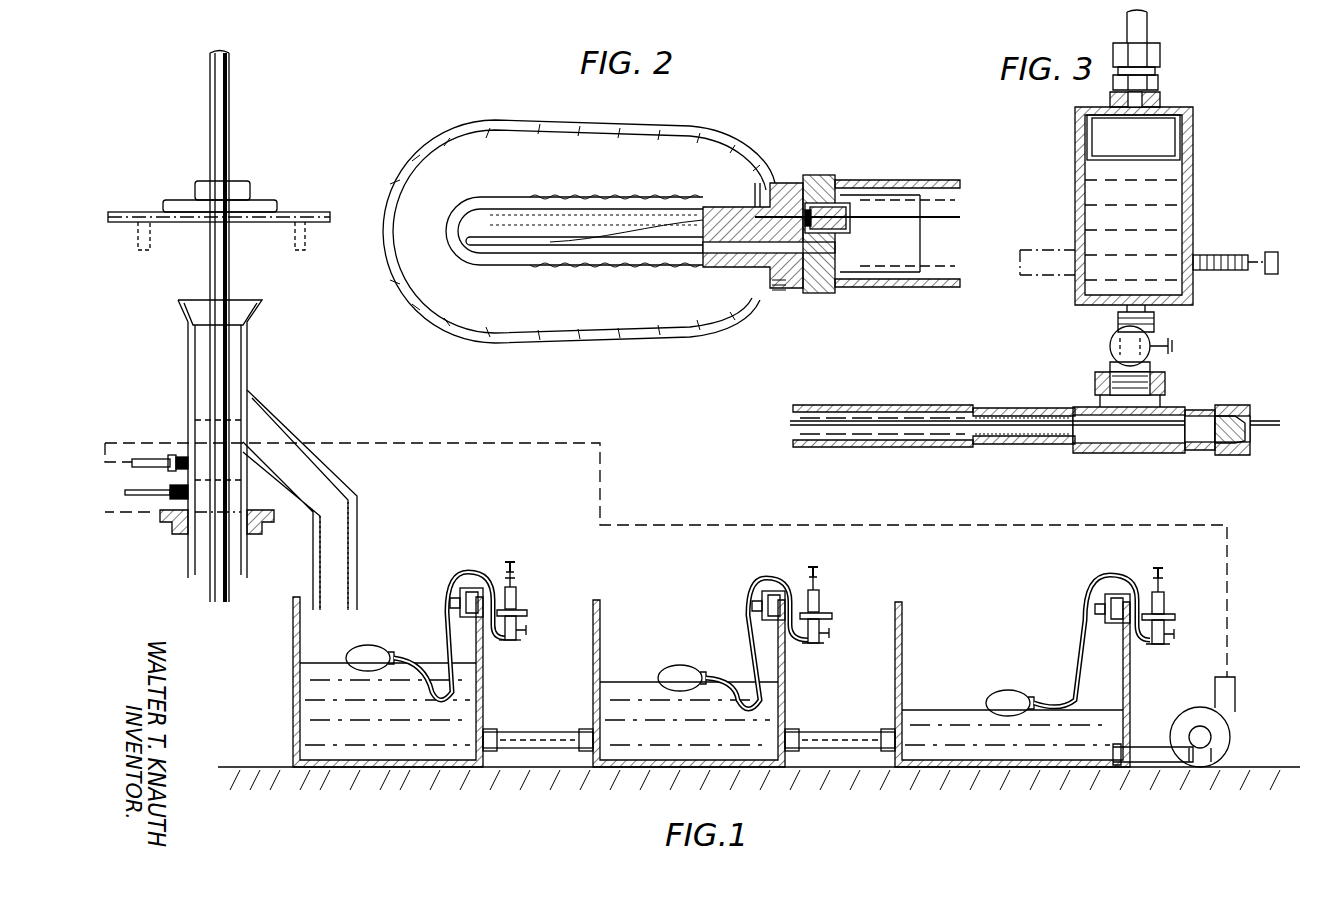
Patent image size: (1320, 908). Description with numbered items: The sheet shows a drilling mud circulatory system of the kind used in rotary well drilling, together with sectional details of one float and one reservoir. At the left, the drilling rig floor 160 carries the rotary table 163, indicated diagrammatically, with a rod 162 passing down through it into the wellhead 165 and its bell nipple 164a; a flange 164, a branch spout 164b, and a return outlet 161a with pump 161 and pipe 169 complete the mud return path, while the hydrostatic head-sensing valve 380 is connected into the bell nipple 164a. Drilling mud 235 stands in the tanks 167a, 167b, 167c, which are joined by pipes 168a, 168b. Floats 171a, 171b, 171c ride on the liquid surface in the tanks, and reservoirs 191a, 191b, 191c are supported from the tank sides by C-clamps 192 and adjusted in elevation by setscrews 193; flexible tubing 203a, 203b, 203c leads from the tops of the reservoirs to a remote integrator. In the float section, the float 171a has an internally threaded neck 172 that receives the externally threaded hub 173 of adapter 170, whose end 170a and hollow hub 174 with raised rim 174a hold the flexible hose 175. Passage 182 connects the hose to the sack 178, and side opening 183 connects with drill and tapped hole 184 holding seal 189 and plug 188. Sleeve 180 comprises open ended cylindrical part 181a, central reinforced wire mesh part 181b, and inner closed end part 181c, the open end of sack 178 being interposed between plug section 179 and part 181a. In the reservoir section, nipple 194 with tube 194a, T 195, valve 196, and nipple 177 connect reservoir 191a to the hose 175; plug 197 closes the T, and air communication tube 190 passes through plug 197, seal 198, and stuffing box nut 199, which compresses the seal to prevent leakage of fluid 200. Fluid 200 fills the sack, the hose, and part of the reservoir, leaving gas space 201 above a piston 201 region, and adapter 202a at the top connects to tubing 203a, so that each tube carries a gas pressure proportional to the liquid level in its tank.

In FIG. 1, the drilling rig floor 160 is at (300, 212).
In FIG. 1, the pump 161 is at (1230, 737).
In FIG. 1, the pump outlet 161a is at (1235, 691).
In FIG. 1, the rod 162 is at (230, 100).
In FIG. 1, the rotary table 163 is at (178, 200).
In FIG. 1, the tube flange 164 is at (190, 552).
In FIG. 1, the bell nipple 164a is at (188, 373).
In FIG. 1, the branch spout 164b is at (300, 454).
In FIG. 1, the wellhead 165 is at (146, 516).
In FIG. 1, the tank 167a is at (405, 597).
In FIG. 1, the tank 167b is at (648, 600).
In FIG. 1, the tank 167c is at (967, 602).
In FIG. 1, the connecting pipe 168a is at (540, 732).
In FIG. 1, the connecting pipe 168b is at (838, 732).
In FIG. 1, the pump inlet pipe 169 is at (1145, 747).
In FIG. 2, the adapter 170 is at (834, 300).
In FIG. 2, the fitting body end 170a is at (835, 301).
In FIG. 1, the float 171a is at (362, 646).
In FIG. 2, the float 171a is at (528, 121).
In FIG. 1, the float 171b is at (672, 666).
In FIG. 1, the float 171c is at (1000, 691).
In FIG. 2, the internally threaded neck 172 is at (778, 300).
In FIG. 2, the externally threaded hub 173 is at (795, 296).
In FIG. 2, the hollow hub 174 is at (870, 180).
In FIG. 2, the raised rim 174a is at (895, 288).
In FIG. 1, the flexible hose 175 is at (450, 637).
In FIG. 2, the flexible hose 175 is at (930, 180).
In FIG. 3, the flexible hose 175 is at (905, 405).
In FIG. 3, the nipple 177 is at (1154, 319).
In FIG. 2, the sack 178 is at (630, 223).
In FIG. 2, the plug section 179 is at (760, 259).
In FIG. 2, the sleeve 180 is at (648, 296).
In FIG. 2, the open ended cylindrical part 181a is at (660, 303).
In FIG. 2, the central reinforced wire mesh part 181b is at (560, 197).
In FIG. 2, the inner closed end part 181c is at (490, 270).
In FIG. 2, the passage 182 is at (772, 301).
In FIG. 2, the side opening 183 is at (757, 183).
In FIG. 2, the drill and tapped hole 184 is at (775, 183).
In FIG. 2, the plug 188 is at (935, 201).
In FIG. 2, the seal 189 is at (815, 203).
In FIG. 2, the air communication tube 190 is at (935, 226).
In FIG. 3, the air communication tube 190 is at (790, 425).
In FIG. 1, the reservoir 191a is at (517, 596).
In FIG. 3, the reservoir 191a is at (1193, 164).
In FIG. 1, the reservoir 191b is at (820, 599).
In FIG. 1, the reservoir 191c is at (1164, 600).
In FIG. 1, the C-clamp 192 is at (524, 612).
In FIG. 3, the C-clamp 192 is at (1218, 255).
In FIG. 3, the setscrew 193 is at (1270, 275).
In FIG. 3, the nipple 194 is at (1070, 407).
In FIG. 3, the tube 194a is at (1005, 391).
In FIG. 3, the T 195 is at (1160, 393).
In FIG. 1, the valve 196 is at (530, 631).
In FIG. 3, the valve 196 is at (1112, 347).
In FIG. 3, the plug 197 is at (1205, 452).
In FIG. 3, the seal 198 is at (1245, 455).
In FIG. 3, the stuffing box nut 199 is at (1240, 413).
In FIG. 2, the fluid 200 is at (615, 263).
In FIG. 3, the fluid 200 is at (1133, 233).
In FIG. 3, the space 201 is at (1133, 137).
In FIG. 3, the lock nut 202a is at (1158, 84).
In FIG. 1, the flexible tubing 203a is at (510, 568).
In FIG. 3, the flexible tubing 203a is at (1147, 31).
In FIG. 1, the flexible tubing 203b is at (813, 573).
In FIG. 1, the flexible tubing 203c is at (1158, 574).
In FIG. 1, the liquid bath 235 is at (690, 736).
In FIG. 1, the hydrostatic head-sensing valve 380 is at (158, 483).